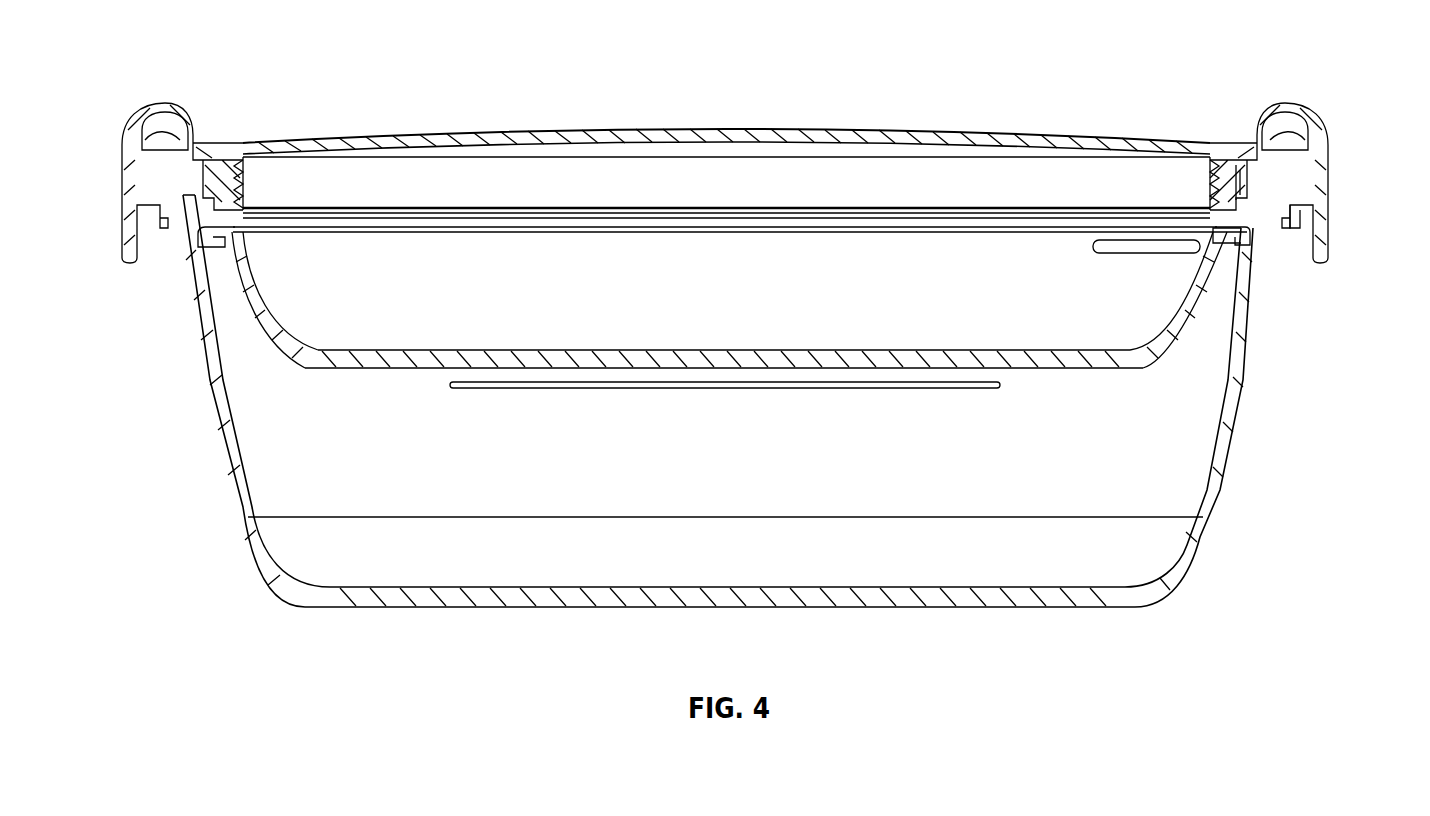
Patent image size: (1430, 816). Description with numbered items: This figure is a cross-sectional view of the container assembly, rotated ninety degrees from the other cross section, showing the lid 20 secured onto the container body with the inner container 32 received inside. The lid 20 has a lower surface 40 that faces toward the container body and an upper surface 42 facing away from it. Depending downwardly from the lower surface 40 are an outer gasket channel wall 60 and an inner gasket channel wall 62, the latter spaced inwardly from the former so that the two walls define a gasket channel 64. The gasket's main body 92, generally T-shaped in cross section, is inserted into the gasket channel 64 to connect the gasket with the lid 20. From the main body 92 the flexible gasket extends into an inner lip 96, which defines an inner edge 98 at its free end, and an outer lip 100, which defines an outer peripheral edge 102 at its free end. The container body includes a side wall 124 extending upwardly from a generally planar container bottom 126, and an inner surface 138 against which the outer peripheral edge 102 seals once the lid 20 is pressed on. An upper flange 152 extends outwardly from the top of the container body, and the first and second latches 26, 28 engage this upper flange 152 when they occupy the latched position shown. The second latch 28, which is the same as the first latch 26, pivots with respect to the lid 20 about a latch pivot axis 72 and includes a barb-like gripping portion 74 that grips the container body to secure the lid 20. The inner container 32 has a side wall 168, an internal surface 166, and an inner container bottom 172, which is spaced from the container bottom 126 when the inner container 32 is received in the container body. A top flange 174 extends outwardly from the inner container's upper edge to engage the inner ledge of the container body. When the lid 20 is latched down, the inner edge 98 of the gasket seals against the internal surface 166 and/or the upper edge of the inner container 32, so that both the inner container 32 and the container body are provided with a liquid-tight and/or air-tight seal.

The lid 20 is at (725, 140).
The upper surface 42 is at (537, 128).
The lower surface 40 is at (870, 144).
The main body 92 is at (205, 190).
The outer peripheral edge 102 is at (215, 196).
The gasket channel 64 is at (1222, 158).
The outer gasket channel wall 60 is at (1238, 160).
The inner gasket channel wall 62 is at (1210, 189).
The inner lip 96 is at (355, 226).
The inner edge 98 is at (433, 228).
The first latch 26 is at (126, 138).
The second latch 28 is at (1340, 173).
The latch pivot axis 72 is at (1293, 104).
The upper flange 152 is at (1303, 200).
The gripping portion 74 is at (1300, 228).
The inner container 32 is at (685, 338).
The side wall 168 is at (265, 325).
The internal surface 166 is at (1184, 316).
The top flange 174 is at (230, 240).
The inner container bottom 172 is at (1045, 357).
The side wall 124 is at (722, 427).
The outer lip 100 is at (197, 233).
The inner surface 138 is at (1212, 487).
The container bottom 126 is at (977, 593).